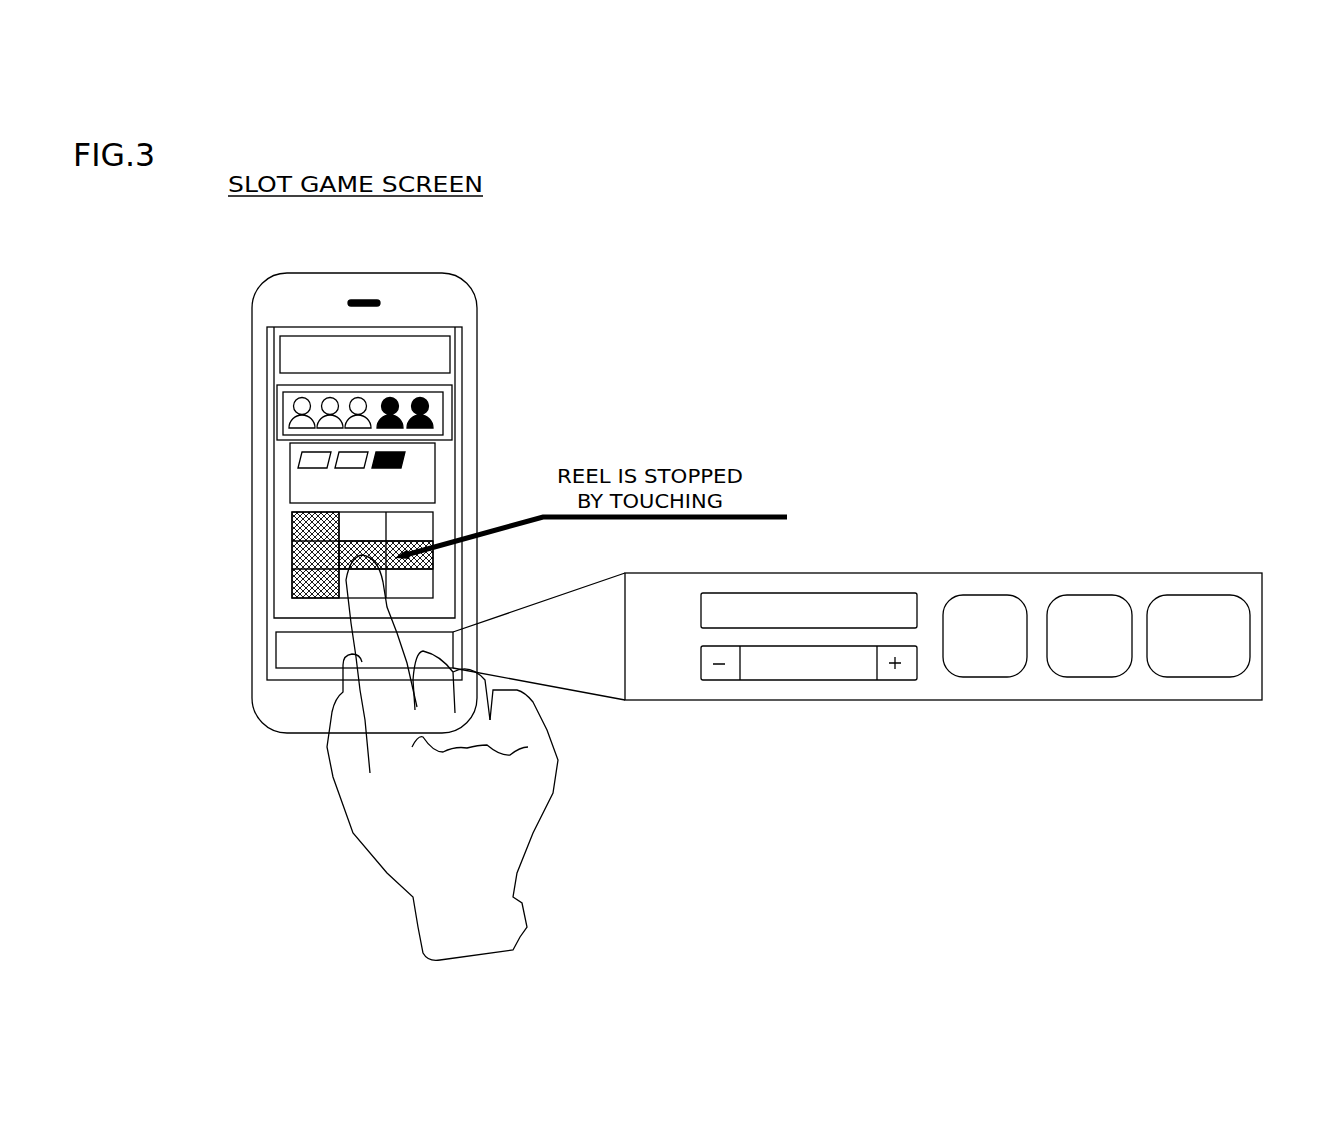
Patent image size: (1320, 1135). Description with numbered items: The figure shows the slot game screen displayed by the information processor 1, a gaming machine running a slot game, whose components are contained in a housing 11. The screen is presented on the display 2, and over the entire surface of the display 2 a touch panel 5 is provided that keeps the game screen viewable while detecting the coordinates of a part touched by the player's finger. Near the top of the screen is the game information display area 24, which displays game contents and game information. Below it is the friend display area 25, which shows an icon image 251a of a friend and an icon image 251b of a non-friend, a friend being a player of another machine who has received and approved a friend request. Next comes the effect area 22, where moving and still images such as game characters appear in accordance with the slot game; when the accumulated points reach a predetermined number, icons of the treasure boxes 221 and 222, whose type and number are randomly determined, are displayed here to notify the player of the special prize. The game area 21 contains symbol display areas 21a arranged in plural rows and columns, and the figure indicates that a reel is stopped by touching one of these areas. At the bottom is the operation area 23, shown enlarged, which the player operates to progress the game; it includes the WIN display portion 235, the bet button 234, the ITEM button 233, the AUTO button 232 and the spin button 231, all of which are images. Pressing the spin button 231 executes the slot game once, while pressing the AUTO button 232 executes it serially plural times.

The information processor 1 is at (480, 283).
The housing 11 is at (392, 273).
The display 2 is at (408, 503).
The touch panel 5 is at (455, 388).
The game information display area 24 is at (280, 353).
The friend display area 25 is at (348, 401).
The icon image of a friend 251a is at (296, 410).
The icon image of a non-friend 251b is at (432, 408).
The effect area 22 is at (344, 458).
The treasure box 221 is at (298, 460).
The treasure box 222 is at (402, 458).
The game area 21 is at (308, 538).
The symbol display area 21a is at (345, 592).
The operation area 23 is at (277, 650).
The WIN display portion 235 is at (842, 593).
The bet button 234 is at (810, 678).
The ITEM button 233 is at (992, 677).
The AUTO button 232 is at (1097, 677).
The spin button 231 is at (1207, 677).